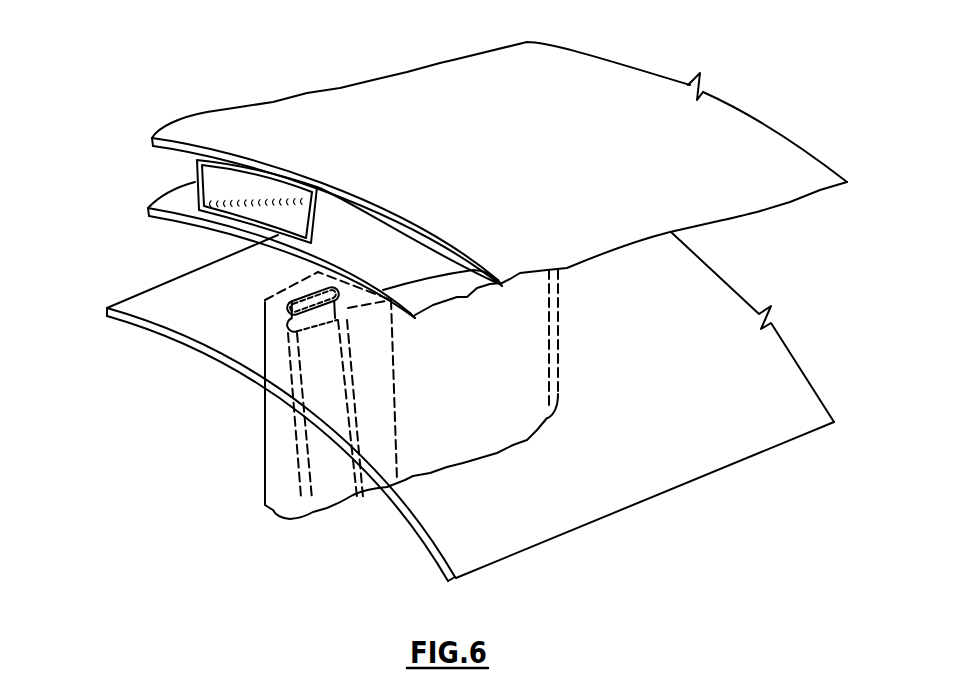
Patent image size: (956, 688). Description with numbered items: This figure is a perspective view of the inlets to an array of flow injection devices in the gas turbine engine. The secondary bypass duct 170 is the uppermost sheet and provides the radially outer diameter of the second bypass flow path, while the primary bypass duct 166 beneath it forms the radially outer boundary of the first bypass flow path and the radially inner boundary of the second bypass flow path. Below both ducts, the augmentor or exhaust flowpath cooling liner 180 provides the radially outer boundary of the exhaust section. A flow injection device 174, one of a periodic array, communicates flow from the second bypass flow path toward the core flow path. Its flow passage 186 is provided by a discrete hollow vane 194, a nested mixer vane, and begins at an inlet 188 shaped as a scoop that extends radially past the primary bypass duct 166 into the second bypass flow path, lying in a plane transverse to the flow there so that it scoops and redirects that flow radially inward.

The secondary bypass duct 170 is at (448, 77).
The primary bypass duct 166 is at (183, 205).
The flow passage 186 is at (276, 207).
The inlet 188 is at (148, 189).
The flow injection device 174 is at (553, 328).
The hollow vane 194 is at (277, 460).
The exhaust flowpath cooling liner 180 is at (449, 512).